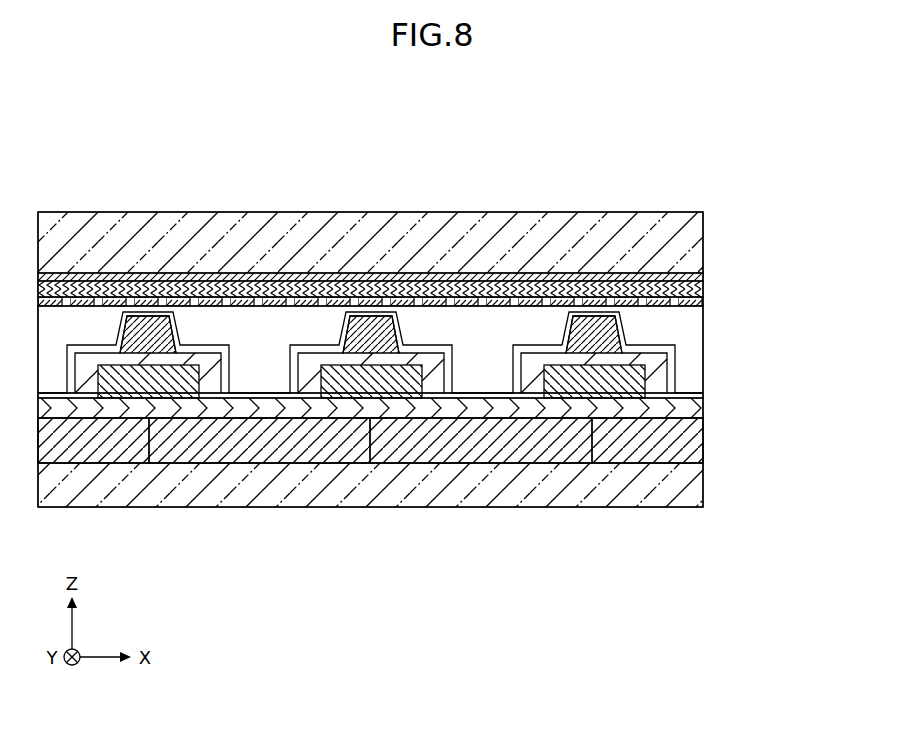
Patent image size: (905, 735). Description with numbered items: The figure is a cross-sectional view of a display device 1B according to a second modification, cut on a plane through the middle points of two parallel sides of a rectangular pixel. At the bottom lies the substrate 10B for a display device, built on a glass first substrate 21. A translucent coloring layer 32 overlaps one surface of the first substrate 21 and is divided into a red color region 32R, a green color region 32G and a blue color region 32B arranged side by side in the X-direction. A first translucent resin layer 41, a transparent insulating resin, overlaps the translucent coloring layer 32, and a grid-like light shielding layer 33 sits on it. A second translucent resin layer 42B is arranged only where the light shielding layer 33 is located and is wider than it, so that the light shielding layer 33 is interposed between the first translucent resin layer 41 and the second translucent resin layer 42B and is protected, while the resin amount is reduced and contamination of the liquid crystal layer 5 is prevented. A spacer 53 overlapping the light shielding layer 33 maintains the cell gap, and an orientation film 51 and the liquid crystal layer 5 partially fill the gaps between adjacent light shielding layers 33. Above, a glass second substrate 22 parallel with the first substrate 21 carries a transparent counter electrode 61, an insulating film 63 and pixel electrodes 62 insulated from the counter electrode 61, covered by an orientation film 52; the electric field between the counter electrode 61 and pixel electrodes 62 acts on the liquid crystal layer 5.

The display device 1B is at (693, 156).
The second substrate 22 is at (692, 227).
The counter electrode 61 is at (694, 277).
The insulating film 63 is at (695, 289).
The orientation film 52 is at (697, 307).
The pixel electrode 62 is at (55, 297).
The substrate for a display device 10B is at (770, 335).
The liquid crystal layer 5 is at (688, 325).
The second translucent resin layer 42B is at (666, 366).
The spacer 53 is at (148, 330).
The light shielding layer 33 is at (112, 380).
The orientation film 51 is at (692, 394).
The first translucent resin layer 41 is at (692, 411).
The translucent coloring layer 32 is at (692, 439).
The color region 32R is at (104, 444).
The color region 32G is at (270, 444).
The color region 32B is at (481, 444).
The first substrate 21 is at (692, 483).